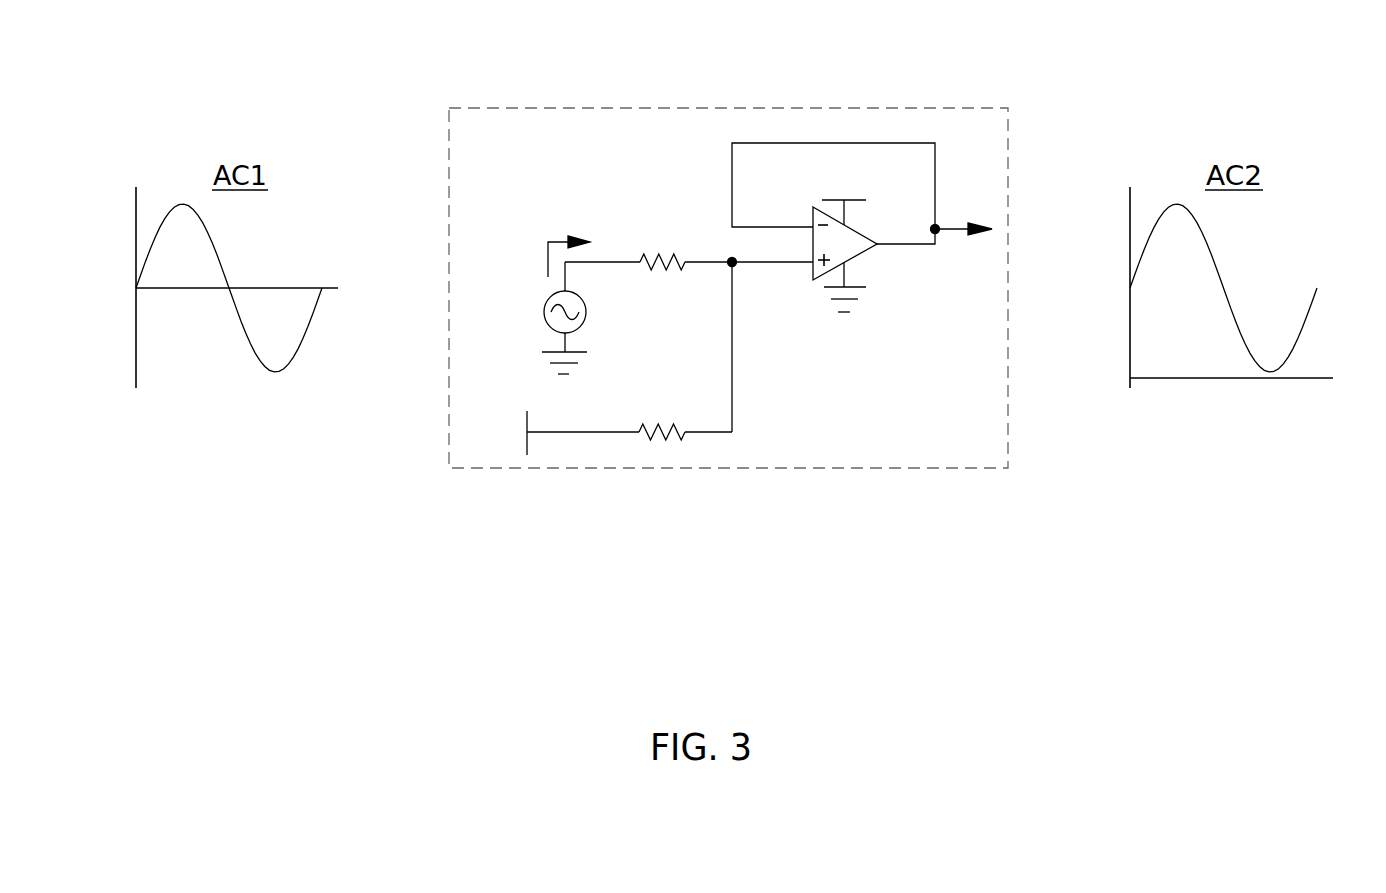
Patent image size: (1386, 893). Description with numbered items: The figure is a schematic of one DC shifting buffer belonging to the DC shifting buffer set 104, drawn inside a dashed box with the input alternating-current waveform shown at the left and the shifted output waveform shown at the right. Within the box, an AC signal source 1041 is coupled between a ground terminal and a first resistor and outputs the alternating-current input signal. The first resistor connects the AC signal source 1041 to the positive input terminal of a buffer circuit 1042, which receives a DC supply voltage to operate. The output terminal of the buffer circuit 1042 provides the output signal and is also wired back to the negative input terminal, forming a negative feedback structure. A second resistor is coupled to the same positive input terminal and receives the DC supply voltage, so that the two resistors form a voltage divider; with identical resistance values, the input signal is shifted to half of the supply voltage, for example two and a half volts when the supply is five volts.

The DC shifting buffer set 104 is at (617, 108).
The AC signal source 1041 is at (586, 305).
The buffer circuit 1042 is at (861, 255).